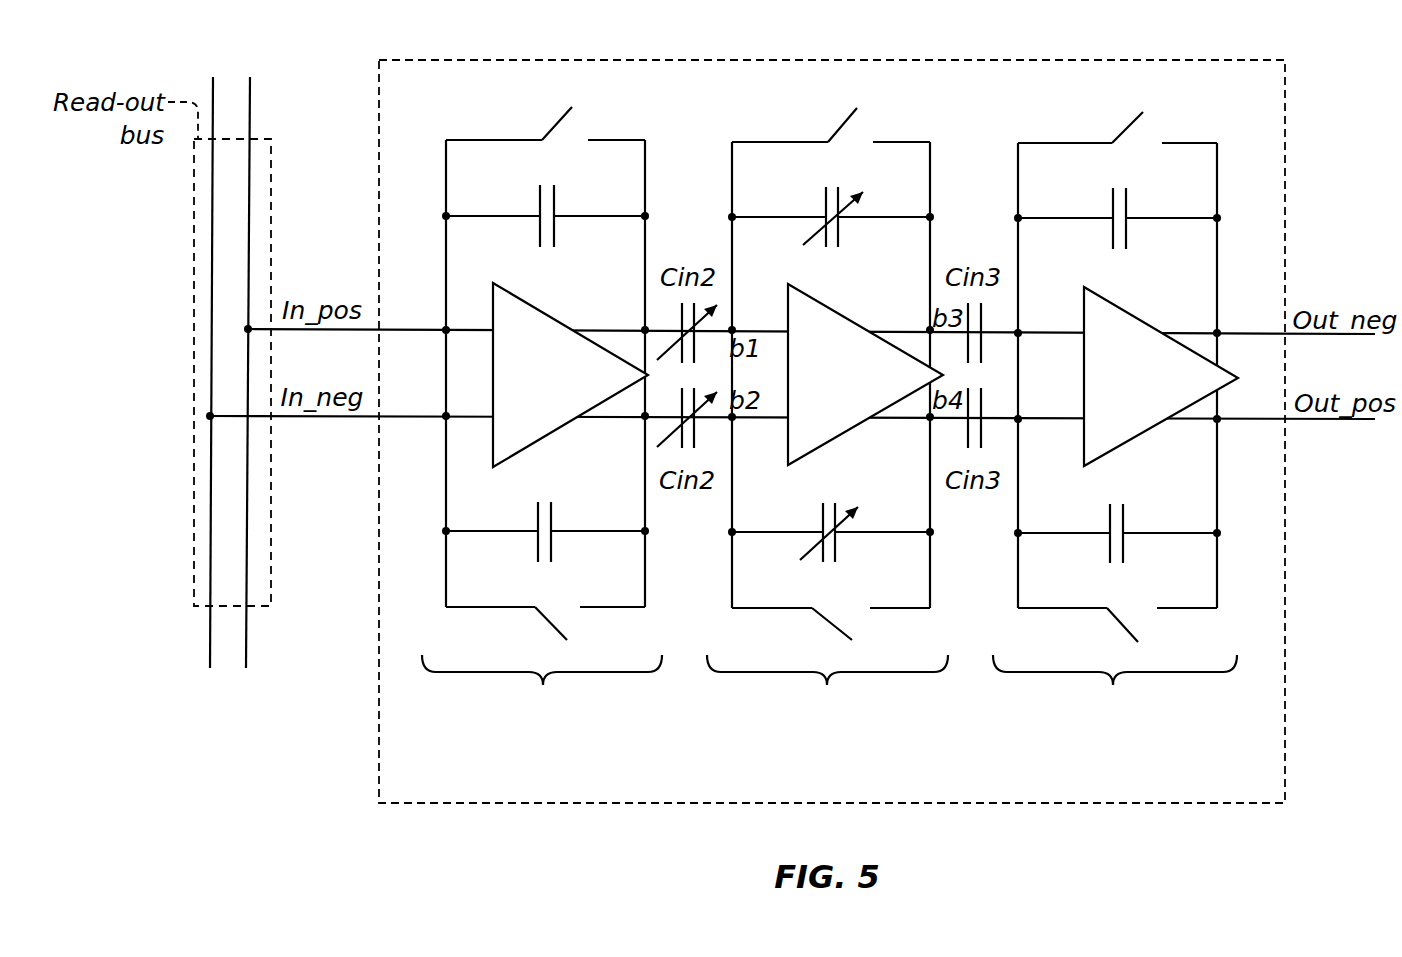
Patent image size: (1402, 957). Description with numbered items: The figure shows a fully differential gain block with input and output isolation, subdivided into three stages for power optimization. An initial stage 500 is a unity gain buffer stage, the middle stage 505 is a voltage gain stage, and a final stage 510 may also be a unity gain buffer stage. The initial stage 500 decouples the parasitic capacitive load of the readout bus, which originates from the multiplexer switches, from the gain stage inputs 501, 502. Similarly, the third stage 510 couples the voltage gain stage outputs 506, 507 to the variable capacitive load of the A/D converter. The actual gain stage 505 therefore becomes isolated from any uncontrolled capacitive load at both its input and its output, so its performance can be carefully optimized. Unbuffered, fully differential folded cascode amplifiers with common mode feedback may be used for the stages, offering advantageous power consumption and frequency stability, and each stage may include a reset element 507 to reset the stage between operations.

The initial stage 500 is at (543, 447).
The gain stage input 501 is at (735, 419).
The gain stage input 502 is at (735, 328).
The middle stage 505 is at (810, 608).
The voltage gain stage output 506 is at (931, 328).
The reset element 507 is at (931, 419).
The final stage 510 is at (1318, 520).